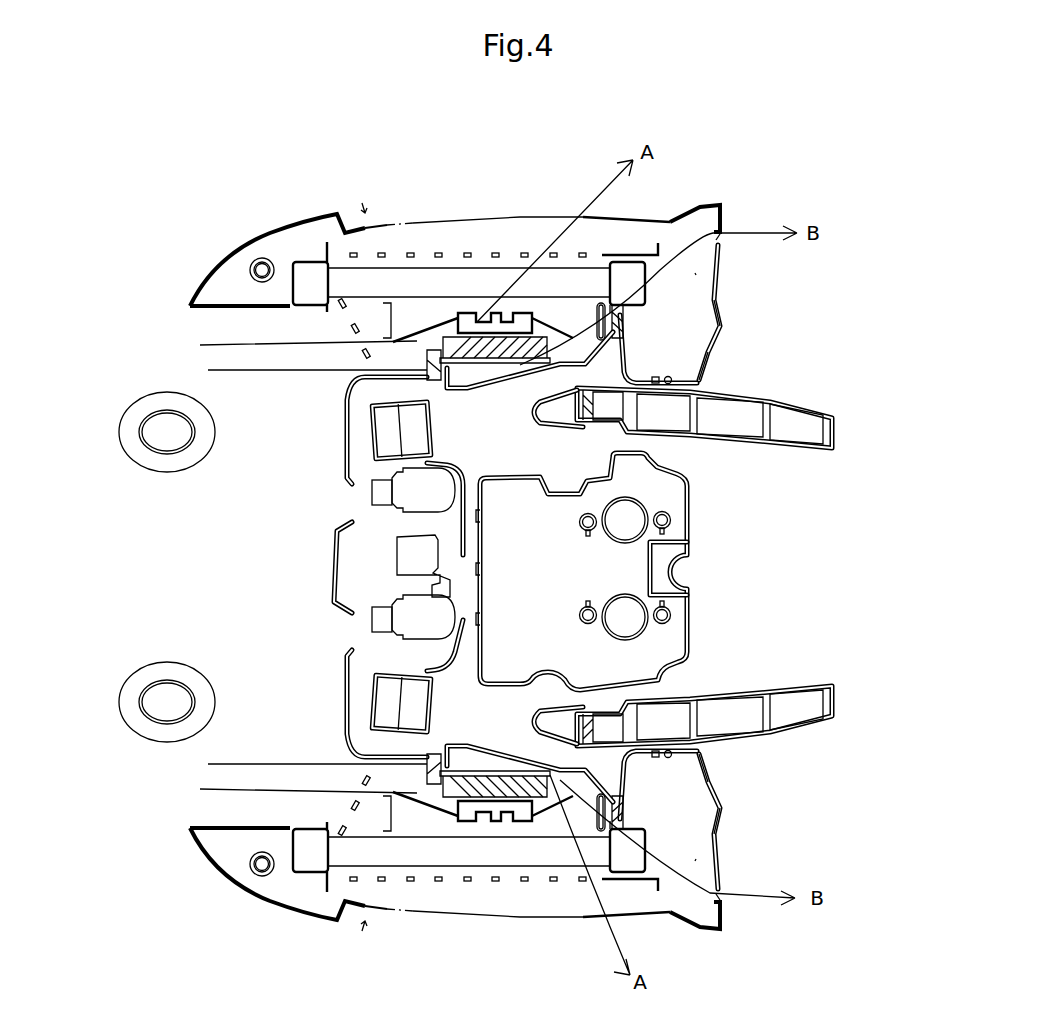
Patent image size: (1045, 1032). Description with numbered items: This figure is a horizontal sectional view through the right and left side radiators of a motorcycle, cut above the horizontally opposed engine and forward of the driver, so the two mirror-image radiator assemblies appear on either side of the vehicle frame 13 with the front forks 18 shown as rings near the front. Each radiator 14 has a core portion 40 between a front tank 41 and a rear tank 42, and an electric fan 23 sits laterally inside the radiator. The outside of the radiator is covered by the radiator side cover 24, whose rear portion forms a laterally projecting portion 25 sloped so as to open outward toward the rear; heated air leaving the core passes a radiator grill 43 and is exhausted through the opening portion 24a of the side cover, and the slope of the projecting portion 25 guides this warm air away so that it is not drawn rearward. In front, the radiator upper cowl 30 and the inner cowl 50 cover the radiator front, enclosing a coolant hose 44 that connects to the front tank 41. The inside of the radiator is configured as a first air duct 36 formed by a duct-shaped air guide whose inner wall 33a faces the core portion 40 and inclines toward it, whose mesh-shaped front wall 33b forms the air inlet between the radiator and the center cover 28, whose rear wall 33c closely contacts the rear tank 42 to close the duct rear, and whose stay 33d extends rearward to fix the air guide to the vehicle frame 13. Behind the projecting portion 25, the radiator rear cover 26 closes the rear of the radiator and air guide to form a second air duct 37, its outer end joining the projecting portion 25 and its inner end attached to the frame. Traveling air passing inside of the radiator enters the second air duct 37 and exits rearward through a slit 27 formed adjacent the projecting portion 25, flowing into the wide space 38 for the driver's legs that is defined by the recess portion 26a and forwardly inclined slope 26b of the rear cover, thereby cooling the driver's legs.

The vehicle frame 13 is at (745, 445).
The radiator 14 is at (424, 276).
The front fork 18 is at (175, 467).
The electric fan 23 is at (483, 314).
The radiator side cover 24 is at (368, 210).
The opening portion 24a is at (523, 251).
The projecting portion 25 is at (715, 205).
The radiator rear cover 26 is at (722, 327).
The recess portion 26a is at (720, 304).
The slope 26b is at (710, 363).
The slit 27 is at (722, 238).
The center cover 28 is at (333, 573).
The radiator upper cowl 30 is at (270, 233).
The inner wall 33a is at (470, 393).
The front wall 33b is at (357, 360).
The rear wall 33c is at (615, 330).
The stay 33d is at (628, 368).
The first air duct 36 is at (357, 310).
The second air duct 37 is at (695, 273).
The space 38 is at (828, 383).
The core portion 40 is at (460, 282).
The front tank 41 is at (311, 268).
The rear tank 42 is at (620, 270).
The radiator grill 43 is at (462, 312).
The coolant hose 44 is at (250, 268).
The inner cowl 50 is at (200, 307).